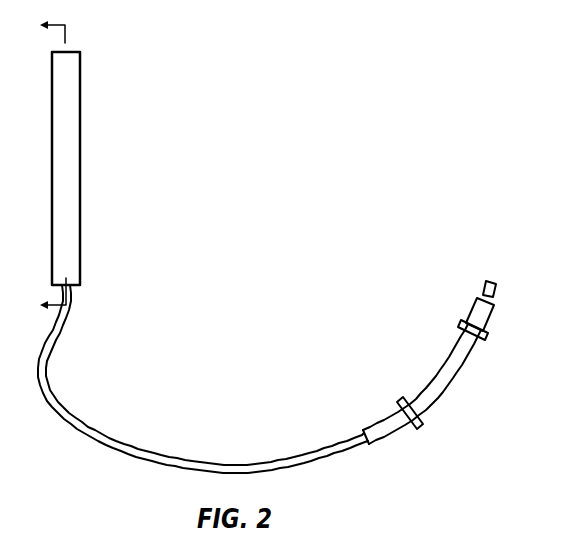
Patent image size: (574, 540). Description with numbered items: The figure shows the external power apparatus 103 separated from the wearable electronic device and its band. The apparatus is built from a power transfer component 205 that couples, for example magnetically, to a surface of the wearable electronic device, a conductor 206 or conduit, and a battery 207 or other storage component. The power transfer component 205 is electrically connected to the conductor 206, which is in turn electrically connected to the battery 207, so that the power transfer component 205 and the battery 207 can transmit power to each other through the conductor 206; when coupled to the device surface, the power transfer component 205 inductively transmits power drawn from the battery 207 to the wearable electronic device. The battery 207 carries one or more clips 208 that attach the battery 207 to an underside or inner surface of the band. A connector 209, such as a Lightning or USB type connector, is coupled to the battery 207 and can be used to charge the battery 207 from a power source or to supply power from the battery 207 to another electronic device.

The external power apparatus 103 is at (220, 78).
The power transfer component 205 is at (81, 116).
The conductor 206 is at (48, 362).
The battery 207 is at (424, 421).
The clip 208 is at (490, 344).
The connector 209 is at (497, 289).